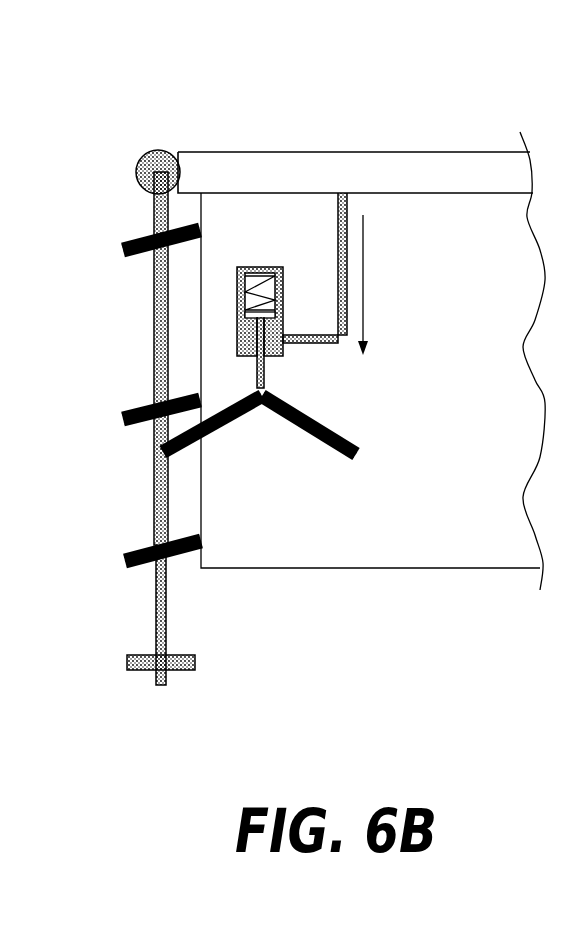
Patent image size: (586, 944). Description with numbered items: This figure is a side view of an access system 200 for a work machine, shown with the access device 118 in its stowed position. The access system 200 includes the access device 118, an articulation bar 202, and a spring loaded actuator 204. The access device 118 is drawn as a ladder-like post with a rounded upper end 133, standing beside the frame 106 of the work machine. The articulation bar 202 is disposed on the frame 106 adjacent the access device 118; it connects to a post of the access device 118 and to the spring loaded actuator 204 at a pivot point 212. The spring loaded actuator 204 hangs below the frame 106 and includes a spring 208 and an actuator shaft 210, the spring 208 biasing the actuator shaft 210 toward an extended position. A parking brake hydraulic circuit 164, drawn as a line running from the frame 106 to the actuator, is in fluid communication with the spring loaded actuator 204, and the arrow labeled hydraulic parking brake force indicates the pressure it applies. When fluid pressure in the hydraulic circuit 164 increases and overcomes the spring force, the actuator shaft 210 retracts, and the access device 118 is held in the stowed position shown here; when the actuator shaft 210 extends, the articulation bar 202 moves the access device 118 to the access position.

The access system 200 is at (405, 82).
The frame 106 is at (303, 163).
The access device 118 is at (153, 325).
The lever pivot ball 133 is at (174, 162).
The hydraulic circuit 164 is at (347, 281).
The spring loaded actuator 204 is at (283, 318).
The spring 208 is at (258, 280).
The actuator shaft 210 is at (265, 373).
The articulation bar 202 is at (218, 422).
The pivot point 212 is at (260, 403).